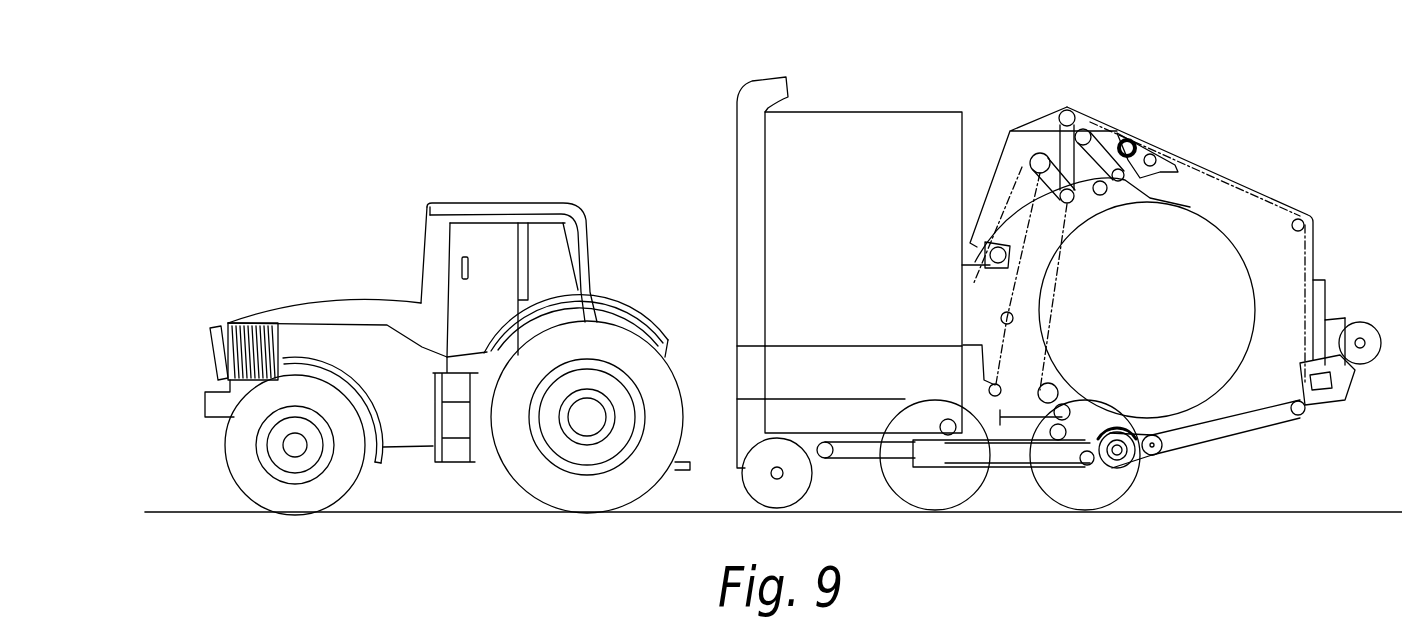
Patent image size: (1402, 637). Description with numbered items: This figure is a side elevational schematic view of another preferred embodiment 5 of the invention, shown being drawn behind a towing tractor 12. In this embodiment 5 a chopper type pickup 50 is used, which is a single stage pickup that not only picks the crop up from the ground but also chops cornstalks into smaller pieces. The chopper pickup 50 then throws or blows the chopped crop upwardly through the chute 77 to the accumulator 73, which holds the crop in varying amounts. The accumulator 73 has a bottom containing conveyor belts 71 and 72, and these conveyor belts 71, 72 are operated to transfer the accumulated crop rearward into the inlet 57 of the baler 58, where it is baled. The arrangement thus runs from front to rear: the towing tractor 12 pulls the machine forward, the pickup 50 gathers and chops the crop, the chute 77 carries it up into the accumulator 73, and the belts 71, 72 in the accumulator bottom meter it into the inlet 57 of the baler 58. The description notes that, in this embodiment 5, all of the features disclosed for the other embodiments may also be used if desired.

The preferred embodiment 5 is at (699, 55).
The towing tractor 12 is at (393, 312).
The chopper type pickup 50 is at (788, 490).
The inlet of the baler 57 is at (1088, 430).
The baler 58 is at (1213, 225).
The conveyor belt 71 is at (868, 455).
The conveyor belt 72 is at (1015, 430).
The accumulator 73 is at (860, 120).
The chute 77 is at (742, 242).